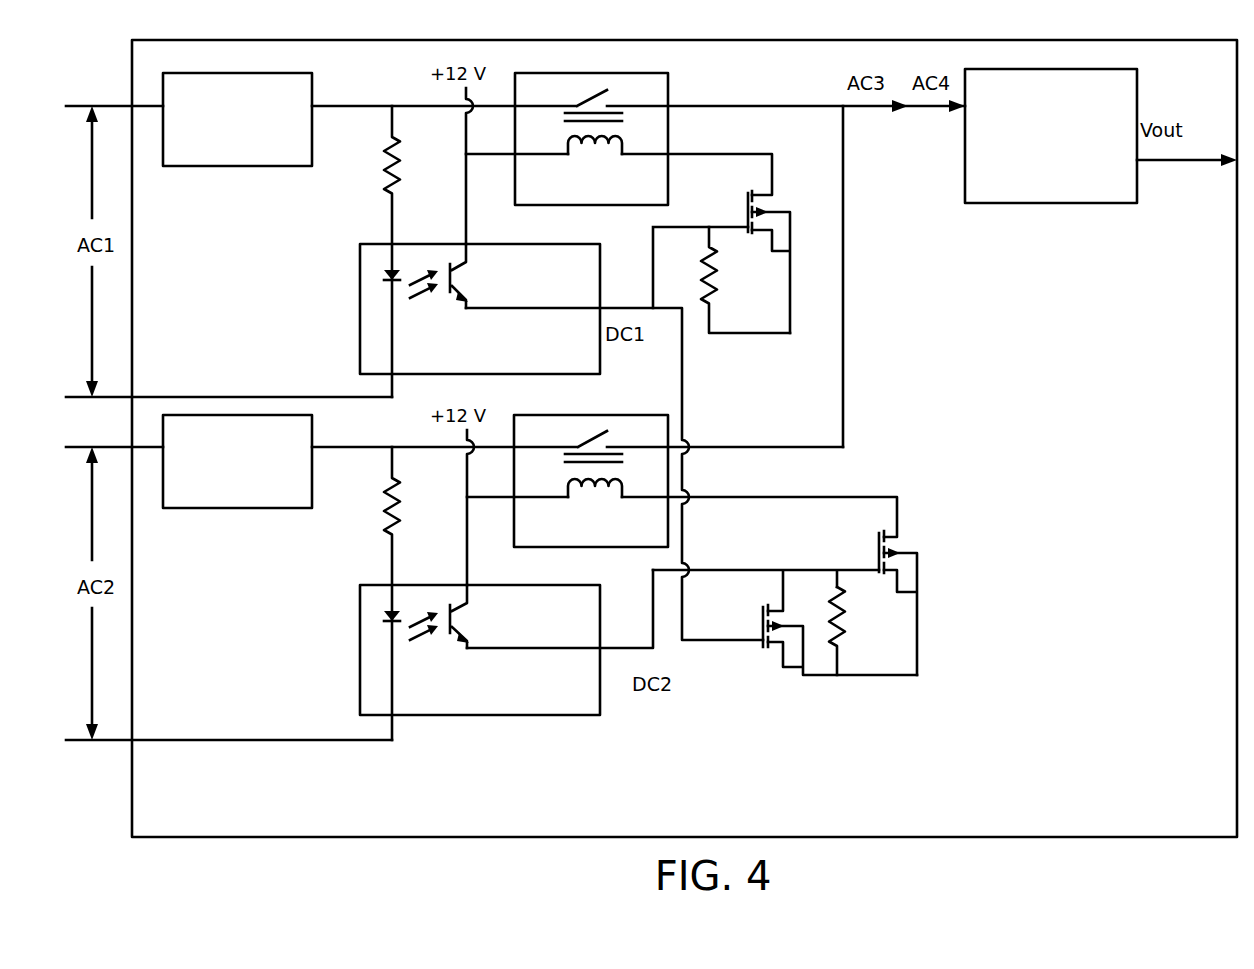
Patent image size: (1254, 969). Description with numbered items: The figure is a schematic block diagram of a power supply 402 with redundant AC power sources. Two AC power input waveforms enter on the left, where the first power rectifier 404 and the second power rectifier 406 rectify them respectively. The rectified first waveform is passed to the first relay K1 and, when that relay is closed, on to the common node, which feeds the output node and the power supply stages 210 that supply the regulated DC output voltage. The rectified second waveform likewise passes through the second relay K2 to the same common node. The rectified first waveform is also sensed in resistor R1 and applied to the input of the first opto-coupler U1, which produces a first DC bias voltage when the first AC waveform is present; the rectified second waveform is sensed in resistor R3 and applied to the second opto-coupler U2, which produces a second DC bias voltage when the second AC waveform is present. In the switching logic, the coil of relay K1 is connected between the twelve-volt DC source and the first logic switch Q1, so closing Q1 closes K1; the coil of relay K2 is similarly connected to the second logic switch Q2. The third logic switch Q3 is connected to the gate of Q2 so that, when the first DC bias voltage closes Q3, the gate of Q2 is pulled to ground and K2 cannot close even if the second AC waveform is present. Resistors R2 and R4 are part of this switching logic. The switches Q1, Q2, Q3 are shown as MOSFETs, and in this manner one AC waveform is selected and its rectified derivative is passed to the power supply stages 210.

The power supply 402 is at (684, 438).
The first power rectifier 404 is at (237, 119).
The second power rectifier 406 is at (237, 461).
The power supply stages 210 is at (1051, 136).
The first relay K1 is at (591, 139).
The second relay K2 is at (591, 481).
The first opto-coupler U1 is at (480, 309).
The second opto-coupler U2 is at (480, 650).
The resistor R1 is at (408, 251).
The resistor R2 is at (745, 280).
The resistor R3 is at (408, 593).
The resistor R4 is at (853, 631).
The first logic switch Q1 is at (785, 256).
The second logic switch Q2 is at (913, 598).
The third logic switch Q3 is at (832, 641).